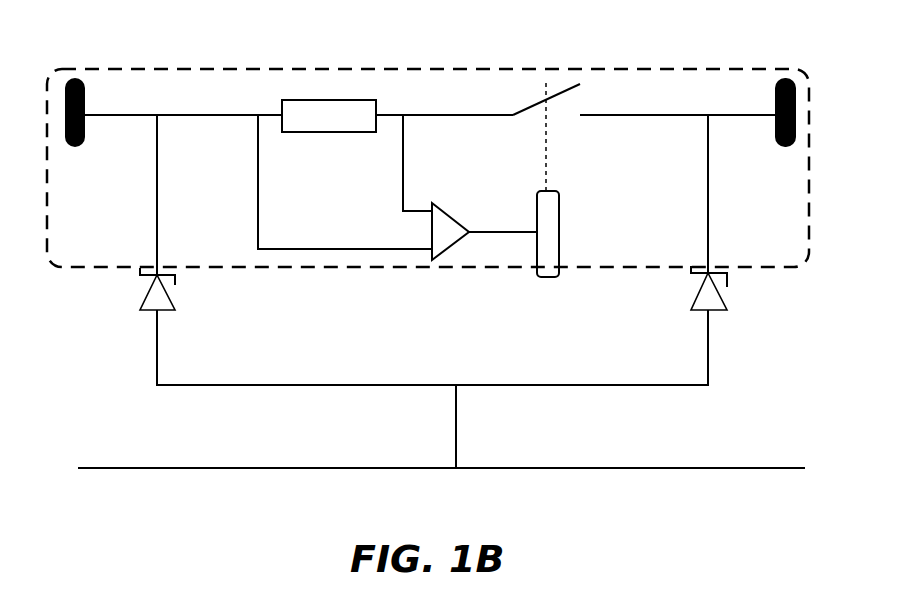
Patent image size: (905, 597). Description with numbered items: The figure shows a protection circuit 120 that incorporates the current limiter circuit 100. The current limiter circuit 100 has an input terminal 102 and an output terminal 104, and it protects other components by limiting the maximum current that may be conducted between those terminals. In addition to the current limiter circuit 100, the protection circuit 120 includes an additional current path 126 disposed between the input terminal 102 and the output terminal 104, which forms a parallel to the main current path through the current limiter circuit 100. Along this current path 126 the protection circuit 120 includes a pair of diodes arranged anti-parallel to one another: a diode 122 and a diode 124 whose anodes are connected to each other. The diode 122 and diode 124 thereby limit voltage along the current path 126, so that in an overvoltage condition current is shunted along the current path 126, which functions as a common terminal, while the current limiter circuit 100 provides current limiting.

The current limiter circuit 100 is at (487, 69).
The input terminal 102 is at (75, 78).
The output terminal 104 is at (778, 78).
The protection circuit 120 is at (461, 520).
The diode 122 is at (145, 310).
The diode 124 is at (713, 303).
The current path 126 is at (143, 192).